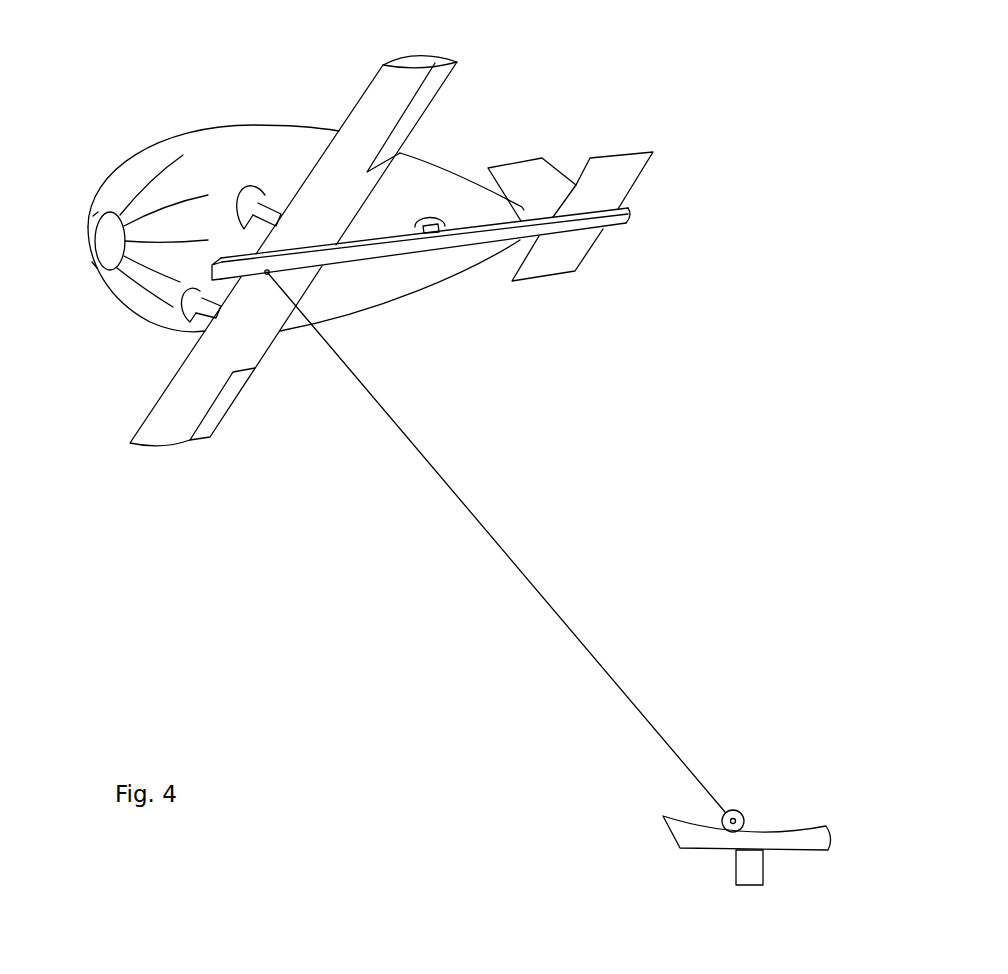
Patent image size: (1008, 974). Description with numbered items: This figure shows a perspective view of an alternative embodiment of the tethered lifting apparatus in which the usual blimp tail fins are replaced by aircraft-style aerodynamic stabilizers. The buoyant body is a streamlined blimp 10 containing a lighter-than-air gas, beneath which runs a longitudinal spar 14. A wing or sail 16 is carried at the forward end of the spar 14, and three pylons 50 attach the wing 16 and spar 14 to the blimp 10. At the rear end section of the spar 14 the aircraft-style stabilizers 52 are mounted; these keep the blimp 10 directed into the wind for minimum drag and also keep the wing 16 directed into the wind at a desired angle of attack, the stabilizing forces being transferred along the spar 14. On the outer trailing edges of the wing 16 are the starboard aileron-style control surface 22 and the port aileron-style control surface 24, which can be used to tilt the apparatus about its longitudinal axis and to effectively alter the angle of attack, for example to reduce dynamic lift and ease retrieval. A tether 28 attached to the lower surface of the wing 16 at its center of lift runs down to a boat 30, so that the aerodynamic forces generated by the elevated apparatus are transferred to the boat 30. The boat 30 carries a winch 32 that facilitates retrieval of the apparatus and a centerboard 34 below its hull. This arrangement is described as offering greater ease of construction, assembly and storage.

The blimp 10 is at (215, 155).
The spar 14 is at (400, 248).
The wing or sail 16 is at (333, 276).
The starboard aileron style control surface 22 is at (220, 407).
The port aileron style control surface 24 is at (428, 95).
The tether 28 is at (468, 497).
The boat 30 is at (810, 836).
The winch 32 is at (737, 810).
The centerboard 34 is at (750, 870).
The pylons 50 is at (433, 222).
The aircraft style aerodynamic stabilizers 52 is at (540, 172).